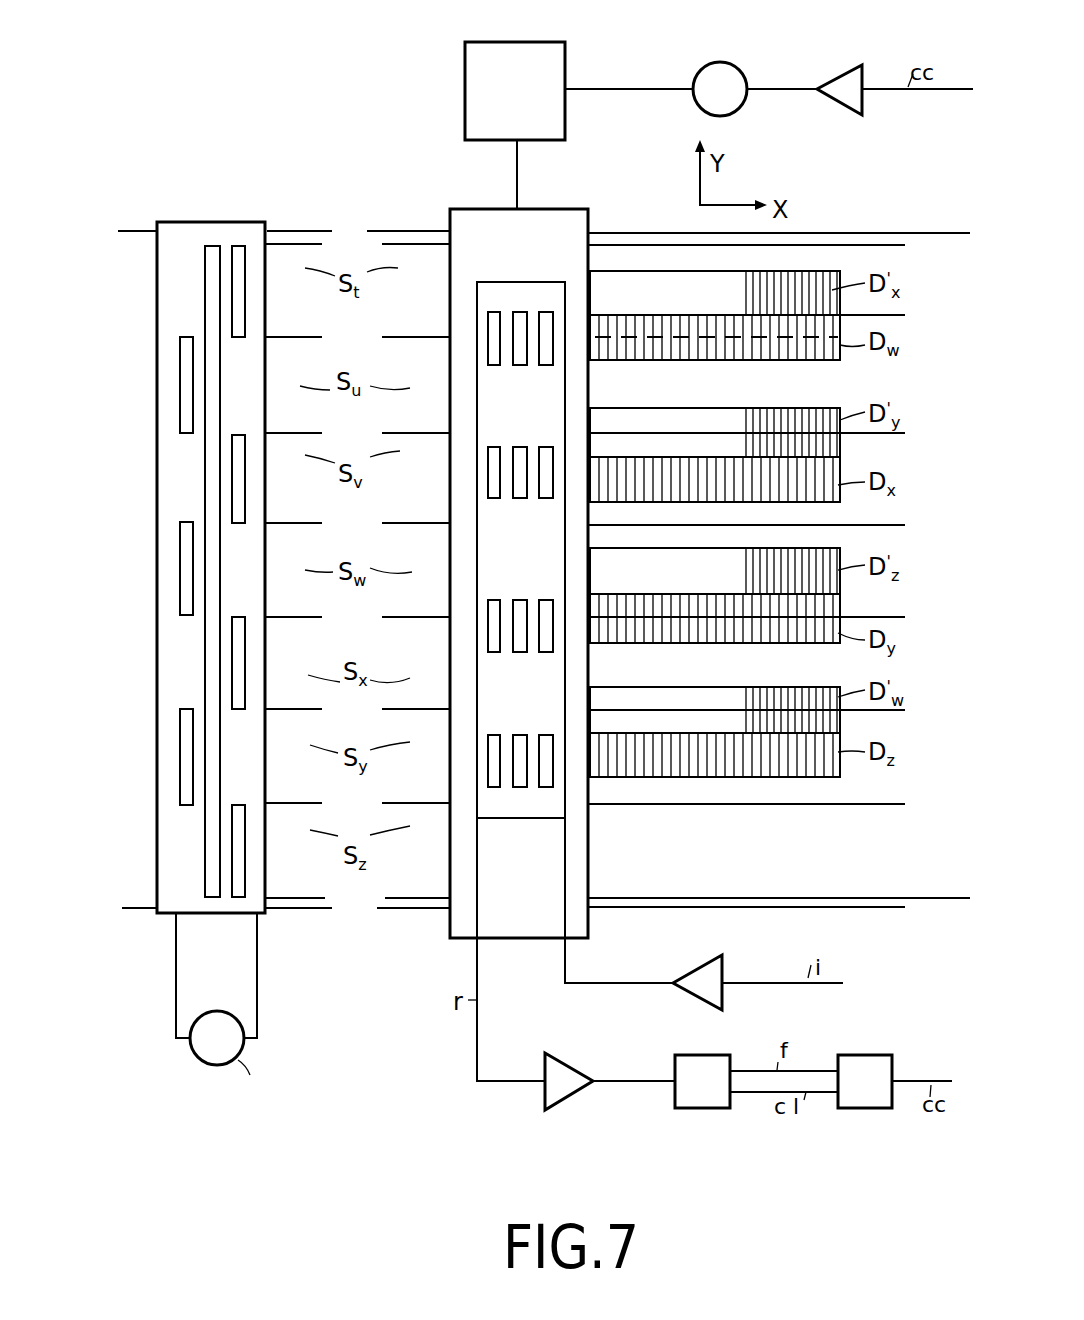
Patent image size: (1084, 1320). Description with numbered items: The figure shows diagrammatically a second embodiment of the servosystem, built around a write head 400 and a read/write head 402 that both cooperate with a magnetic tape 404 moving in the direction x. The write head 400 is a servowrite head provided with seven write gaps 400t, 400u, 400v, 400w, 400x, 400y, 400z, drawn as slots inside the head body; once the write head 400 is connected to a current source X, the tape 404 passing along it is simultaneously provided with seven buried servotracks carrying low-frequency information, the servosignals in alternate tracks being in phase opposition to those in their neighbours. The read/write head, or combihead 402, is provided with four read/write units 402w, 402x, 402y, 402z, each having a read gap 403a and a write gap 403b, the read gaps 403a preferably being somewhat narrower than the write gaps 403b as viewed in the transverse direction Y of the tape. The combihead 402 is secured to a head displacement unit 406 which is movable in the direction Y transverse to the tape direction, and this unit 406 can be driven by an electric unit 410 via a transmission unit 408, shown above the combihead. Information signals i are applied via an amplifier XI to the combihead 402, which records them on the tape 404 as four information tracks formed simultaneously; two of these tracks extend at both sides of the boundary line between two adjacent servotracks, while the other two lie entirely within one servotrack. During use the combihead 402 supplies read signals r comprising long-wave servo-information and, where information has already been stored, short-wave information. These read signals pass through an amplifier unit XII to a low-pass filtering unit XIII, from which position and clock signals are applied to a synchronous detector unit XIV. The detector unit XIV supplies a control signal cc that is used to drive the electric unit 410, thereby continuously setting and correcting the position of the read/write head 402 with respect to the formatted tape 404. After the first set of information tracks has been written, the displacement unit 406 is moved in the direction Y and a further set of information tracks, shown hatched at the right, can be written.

The write head 400 is at (185, 232).
The write gap 400t is at (225, 287).
The write gap 400u is at (197, 367).
The write gap 400v is at (225, 477).
The write gap 400w is at (197, 560).
The write gap 400x is at (225, 660).
The write gap 400y is at (197, 738).
The write gap 400z is at (228, 852).
The read/write head 402 is at (482, 290).
The read/write unit 402w is at (488, 325).
The read/write unit 402x is at (488, 487).
The read/write unit 402y is at (488, 633).
The read/write unit 402z is at (488, 757).
The read gap 403a is at (505, 315).
The write gap 403b is at (532, 317).
The magnetic tape 404 is at (123, 250).
The head displacement unit 406 is at (588, 852).
The transmission unit 408 is at (510, 42).
The electric unit 410 is at (722, 63).
The amplifier XI is at (705, 966).
The amplifier unit XII is at (570, 1098).
The low-pass filtering unit XIII is at (720, 1153).
The synchronous detector unit XIV is at (890, 1153).